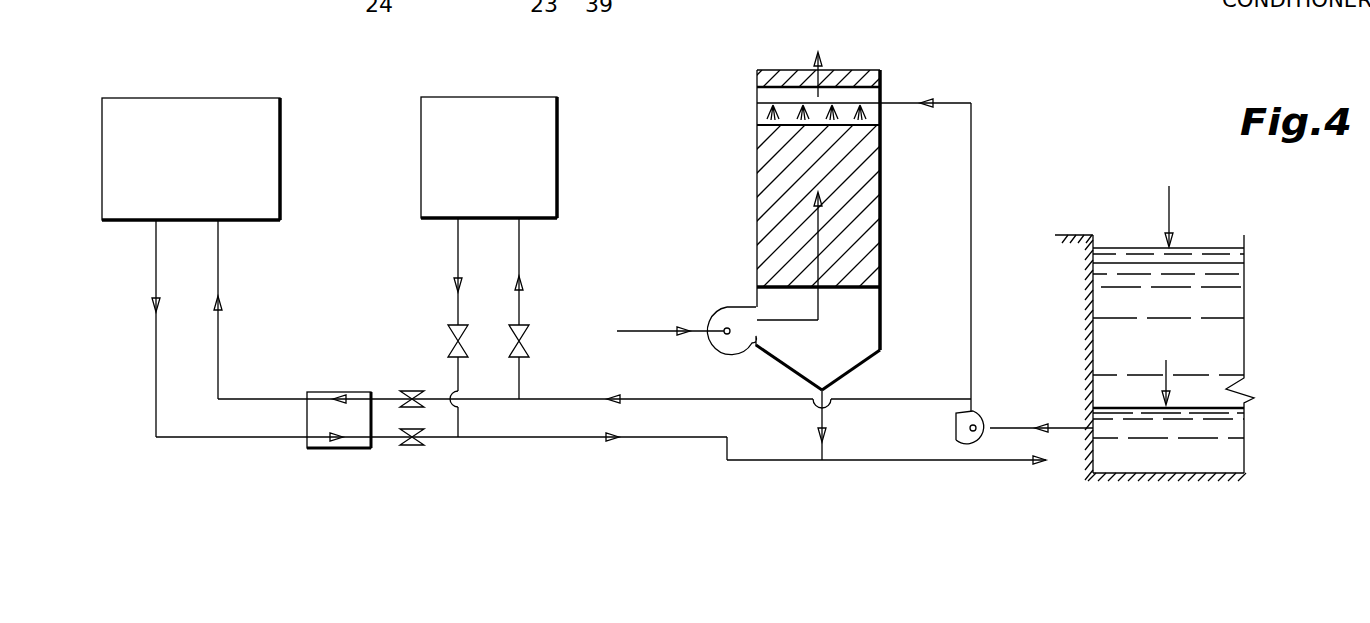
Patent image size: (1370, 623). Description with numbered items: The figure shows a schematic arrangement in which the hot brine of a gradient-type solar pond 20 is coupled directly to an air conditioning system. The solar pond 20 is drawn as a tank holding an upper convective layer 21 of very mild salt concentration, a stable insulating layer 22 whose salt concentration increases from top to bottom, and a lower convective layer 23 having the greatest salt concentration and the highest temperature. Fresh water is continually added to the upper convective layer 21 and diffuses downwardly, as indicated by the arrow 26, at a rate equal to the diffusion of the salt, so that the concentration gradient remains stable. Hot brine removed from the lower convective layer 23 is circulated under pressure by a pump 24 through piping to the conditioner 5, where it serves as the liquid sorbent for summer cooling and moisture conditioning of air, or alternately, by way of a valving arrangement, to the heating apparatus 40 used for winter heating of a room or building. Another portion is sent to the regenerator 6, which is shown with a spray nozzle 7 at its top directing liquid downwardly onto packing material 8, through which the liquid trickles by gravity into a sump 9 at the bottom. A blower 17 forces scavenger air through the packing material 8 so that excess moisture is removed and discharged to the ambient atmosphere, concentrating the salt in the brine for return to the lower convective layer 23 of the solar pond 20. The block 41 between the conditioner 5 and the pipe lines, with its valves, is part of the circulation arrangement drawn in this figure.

The conditioner 5 is at (286, 172).
The heating apparatus 40 is at (561, 162).
The heat exchanger 41 is at (333, 392).
The regenerator 6 is at (870, 66).
The spray nozzle 7 is at (768, 103).
The packing material 8 is at (866, 188).
The sump 9 is at (862, 362).
The blower 17 is at (725, 308).
The pump 24 is at (956, 436).
The solar pond 20 is at (1207, 243).
The upper convective layer 21 is at (1222, 258).
The stable insulating layer 22 is at (1148, 352).
The lower convective layer 23 is at (1174, 466).
The arrow 26 is at (1168, 398).